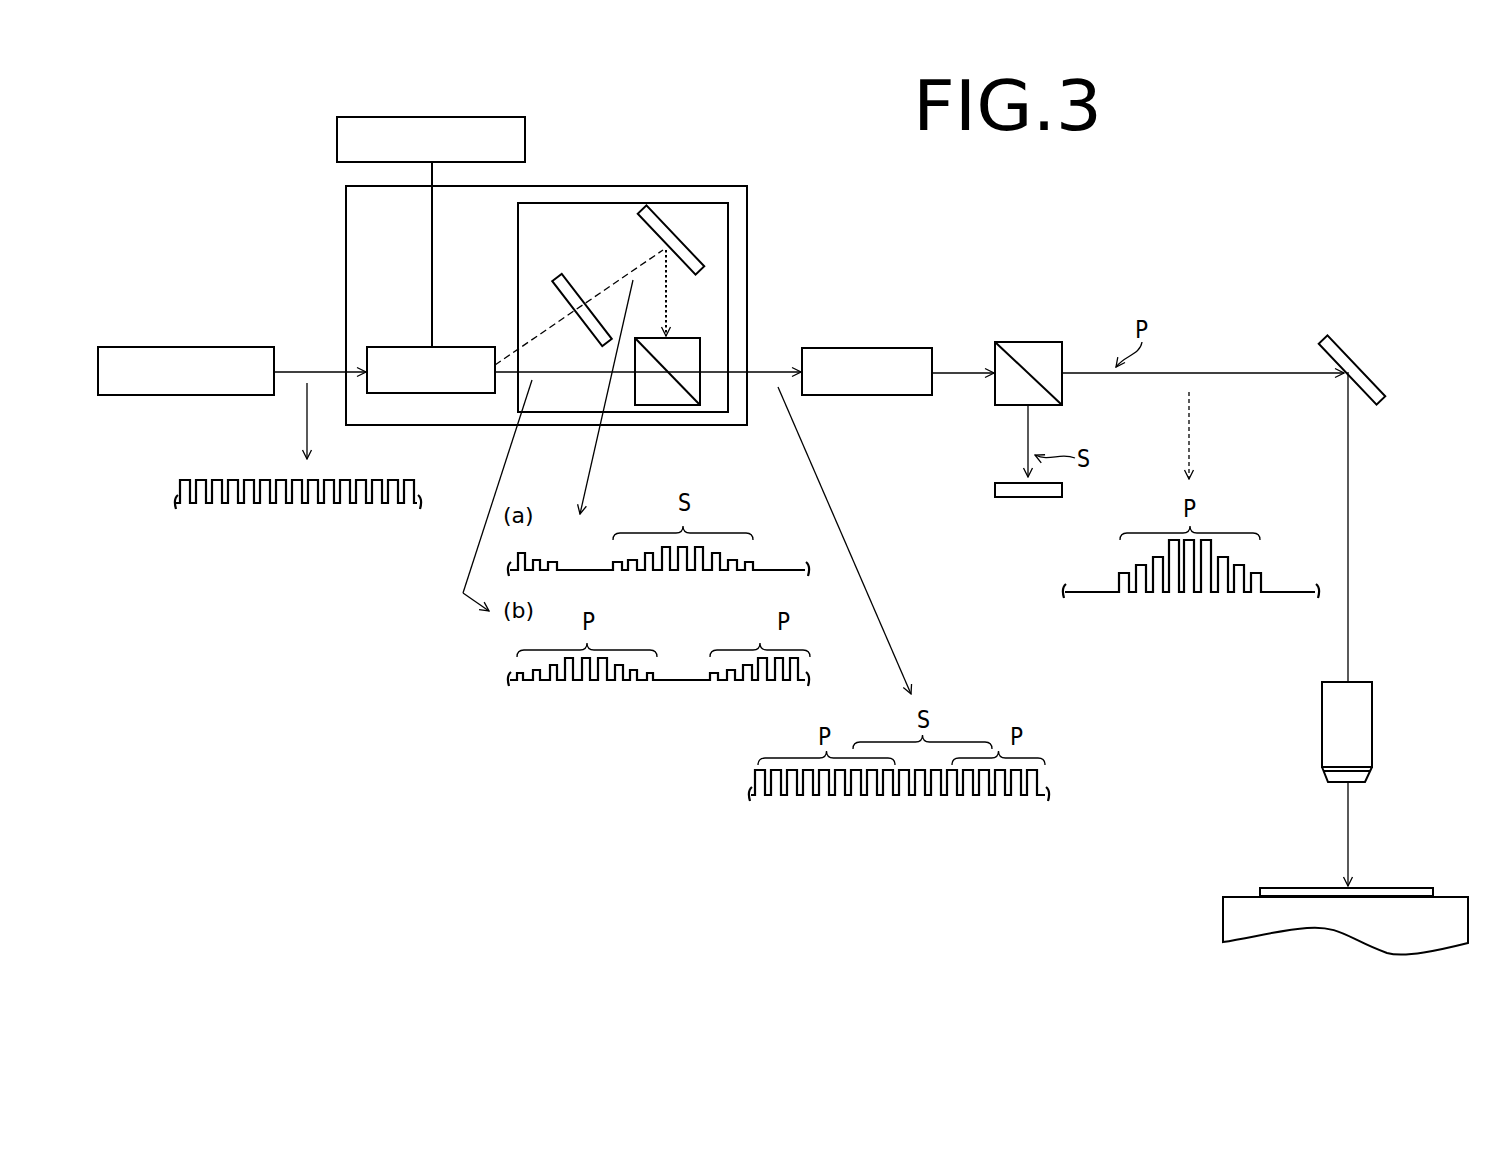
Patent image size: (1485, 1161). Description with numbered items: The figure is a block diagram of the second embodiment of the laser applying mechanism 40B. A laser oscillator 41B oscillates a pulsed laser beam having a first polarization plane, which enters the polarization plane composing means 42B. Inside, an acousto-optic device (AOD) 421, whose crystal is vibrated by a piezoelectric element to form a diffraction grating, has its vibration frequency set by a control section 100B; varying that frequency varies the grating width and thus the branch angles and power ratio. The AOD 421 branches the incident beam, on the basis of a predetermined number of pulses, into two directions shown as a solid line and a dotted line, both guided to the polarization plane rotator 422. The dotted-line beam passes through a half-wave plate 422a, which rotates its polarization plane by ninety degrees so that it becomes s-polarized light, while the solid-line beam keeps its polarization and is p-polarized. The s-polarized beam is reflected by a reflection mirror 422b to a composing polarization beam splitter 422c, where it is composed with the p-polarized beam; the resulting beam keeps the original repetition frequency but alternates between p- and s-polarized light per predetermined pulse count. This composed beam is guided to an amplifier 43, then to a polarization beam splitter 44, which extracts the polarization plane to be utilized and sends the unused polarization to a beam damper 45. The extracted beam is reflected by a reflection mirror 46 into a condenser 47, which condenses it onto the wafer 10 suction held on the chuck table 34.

The control section 100B is at (428, 117).
The laser applying mechanism 40B is at (240, 282).
The polarization plane composing means 42B is at (346, 238).
The laser oscillator 41B is at (183, 347).
The acousto-optic device (AOD) 421 is at (395, 347).
The polarization plane rotator 422 is at (596, 203).
The half-wave plate 422a is at (572, 280).
The reflection mirror 422b is at (692, 254).
The composing polarization beam splitter 422c is at (685, 338).
The amplifier 43 is at (860, 348).
The polarization beam splitter 44 is at (1045, 341).
The beam damper 45 is at (1012, 483).
The reflection mirror 46 is at (1342, 347).
The condenser 47 is at (1357, 743).
The wafer 10 is at (1390, 888).
The chuck table 34 is at (1219, 925).